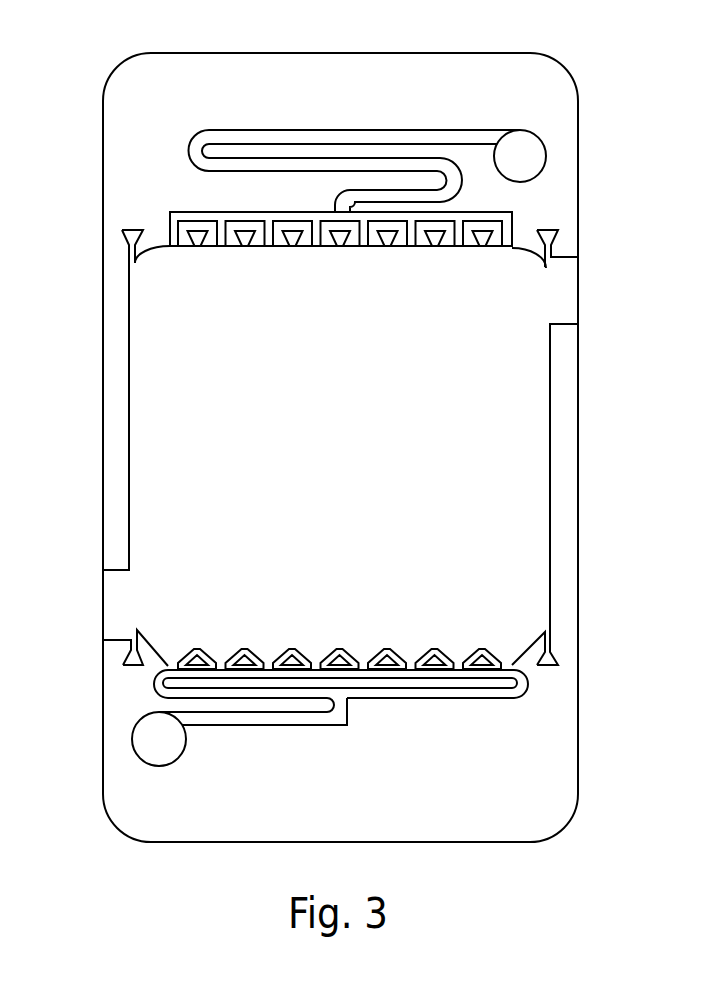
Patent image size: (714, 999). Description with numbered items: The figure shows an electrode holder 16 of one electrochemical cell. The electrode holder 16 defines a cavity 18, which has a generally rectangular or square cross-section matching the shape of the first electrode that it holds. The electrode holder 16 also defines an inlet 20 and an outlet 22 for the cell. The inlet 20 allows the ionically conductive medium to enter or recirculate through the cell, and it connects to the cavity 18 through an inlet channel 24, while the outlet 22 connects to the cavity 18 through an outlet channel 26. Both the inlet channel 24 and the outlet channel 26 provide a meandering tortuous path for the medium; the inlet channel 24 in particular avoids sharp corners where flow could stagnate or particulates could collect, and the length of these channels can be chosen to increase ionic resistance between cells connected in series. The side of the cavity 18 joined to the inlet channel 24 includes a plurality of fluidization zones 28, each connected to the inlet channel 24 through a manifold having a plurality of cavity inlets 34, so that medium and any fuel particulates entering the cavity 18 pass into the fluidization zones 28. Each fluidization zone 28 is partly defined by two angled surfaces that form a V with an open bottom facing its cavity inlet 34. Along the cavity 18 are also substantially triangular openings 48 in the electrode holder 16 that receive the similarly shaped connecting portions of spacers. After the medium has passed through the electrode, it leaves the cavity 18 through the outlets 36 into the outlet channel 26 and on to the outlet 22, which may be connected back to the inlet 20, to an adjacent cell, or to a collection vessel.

The electrode holder 16 is at (118, 114).
The cavity 18 is at (332, 449).
The inlet 20 is at (148, 735).
The outlet 22 is at (537, 158).
The inlet channel 24 is at (333, 720).
The outlet channel 26 is at (297, 136).
The fluidization zones 28 is at (268, 652).
The cavity inlets 34 is at (457, 670).
The outlets 36 is at (512, 242).
The openings 48 is at (248, 237).